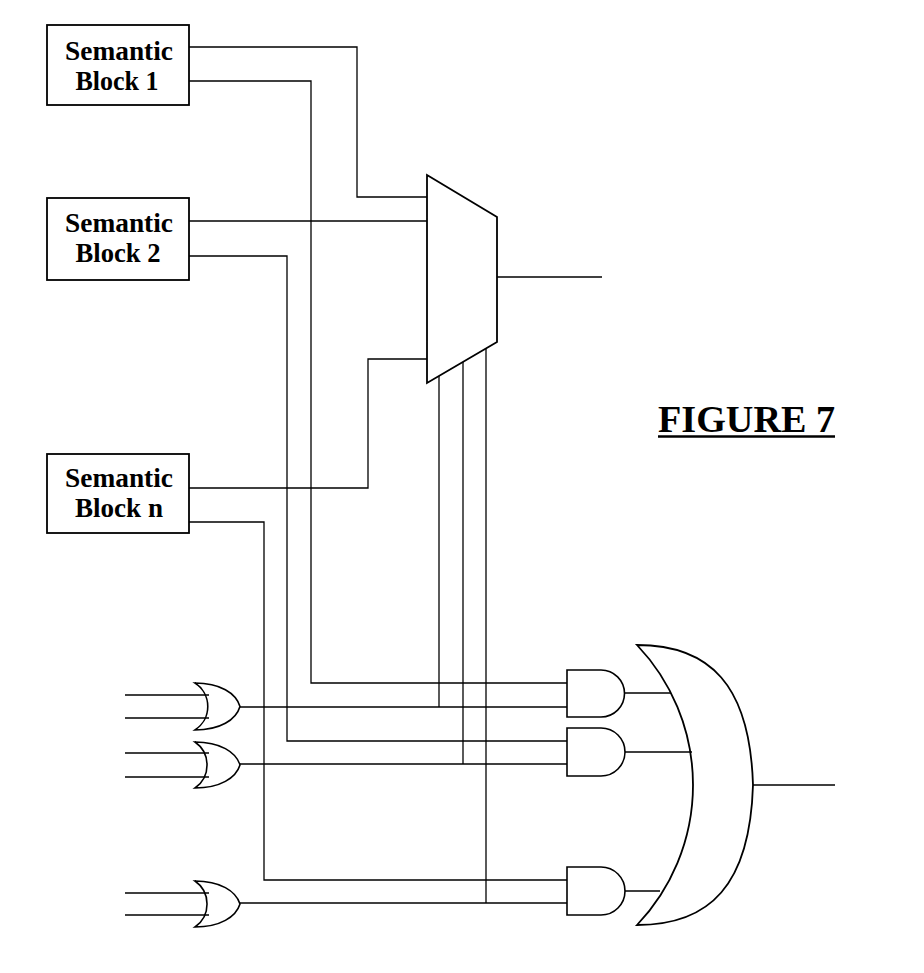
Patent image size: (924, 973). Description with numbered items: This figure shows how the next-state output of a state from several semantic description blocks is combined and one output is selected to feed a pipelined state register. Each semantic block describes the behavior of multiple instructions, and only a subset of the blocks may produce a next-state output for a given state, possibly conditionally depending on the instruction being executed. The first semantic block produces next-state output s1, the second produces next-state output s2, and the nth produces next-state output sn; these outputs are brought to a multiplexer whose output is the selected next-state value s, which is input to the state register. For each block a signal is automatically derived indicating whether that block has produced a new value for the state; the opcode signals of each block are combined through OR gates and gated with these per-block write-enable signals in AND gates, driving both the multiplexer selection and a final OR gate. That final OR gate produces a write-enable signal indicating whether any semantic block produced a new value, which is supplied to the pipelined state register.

The next-state output of first semantic block s1 is at (308, 110).
The next-state output of second semantic block s2 is at (308, 211).
The next-state output of nth semantic block sn is at (308, 426).
The selected next-state output s is at (549, 267).